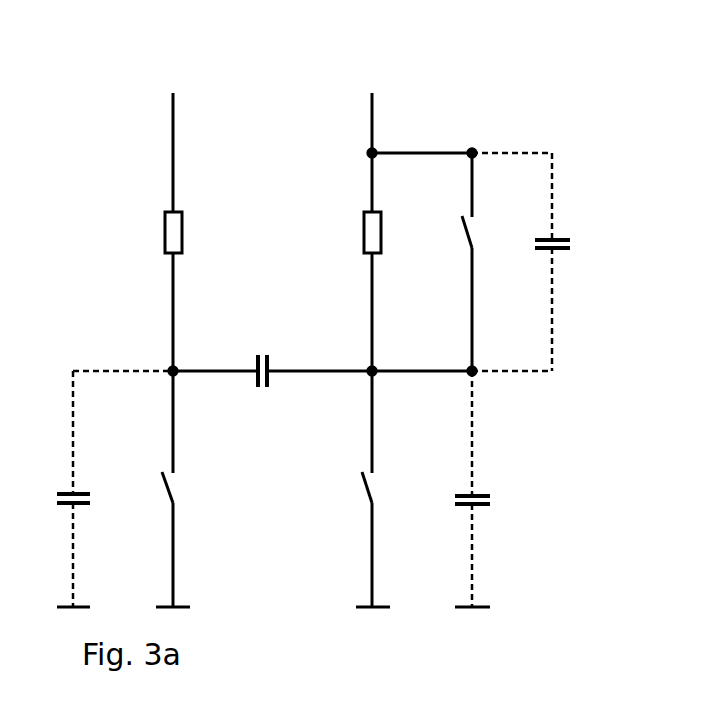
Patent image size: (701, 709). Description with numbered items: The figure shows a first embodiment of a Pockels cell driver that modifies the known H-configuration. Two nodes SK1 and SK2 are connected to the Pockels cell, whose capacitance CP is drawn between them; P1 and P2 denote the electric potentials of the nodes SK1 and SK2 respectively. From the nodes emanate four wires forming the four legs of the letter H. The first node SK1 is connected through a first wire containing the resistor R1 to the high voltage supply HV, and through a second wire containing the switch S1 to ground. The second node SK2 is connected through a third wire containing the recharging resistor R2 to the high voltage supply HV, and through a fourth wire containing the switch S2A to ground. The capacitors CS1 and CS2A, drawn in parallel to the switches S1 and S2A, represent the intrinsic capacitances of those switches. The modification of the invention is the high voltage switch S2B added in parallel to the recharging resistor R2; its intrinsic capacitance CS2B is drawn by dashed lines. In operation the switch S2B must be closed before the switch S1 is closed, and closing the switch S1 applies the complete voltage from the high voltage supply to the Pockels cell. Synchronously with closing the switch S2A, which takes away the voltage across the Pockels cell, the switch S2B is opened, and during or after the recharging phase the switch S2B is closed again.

The high voltage supply HV is at (285, 70).
The resistor R1 is at (198, 196).
The recharging resistor R2 is at (397, 196).
The electric potential P1 is at (155, 338).
The electric potential P2 is at (396, 338).
The first node SK1 is at (166, 378).
The second node SK2 is at (382, 378).
The switch S1 is at (186, 513).
The switch S2A is at (397, 513).
The high voltage switch S2B is at (451, 262).
The capacitor CS1 is at (115, 489).
The capacitor CS2A is at (497, 489).
The intrinsic capacitance CS2B is at (546, 262).
The capacitance of the Pockels cell CP is at (272, 362).